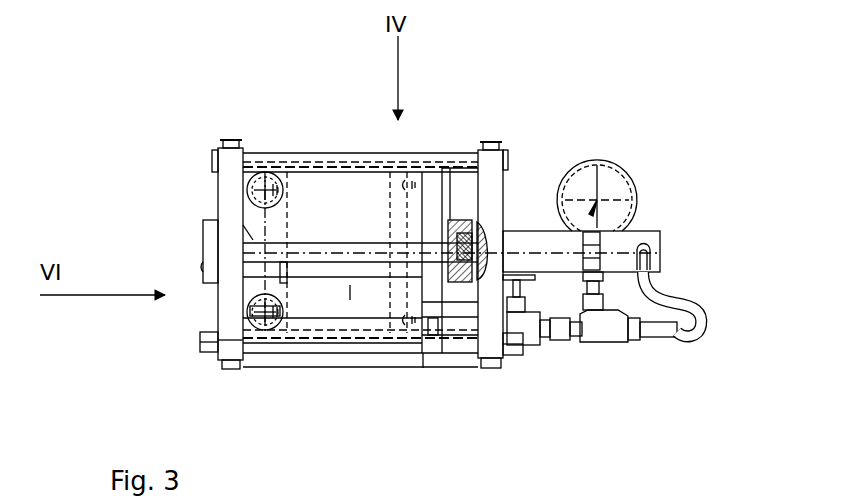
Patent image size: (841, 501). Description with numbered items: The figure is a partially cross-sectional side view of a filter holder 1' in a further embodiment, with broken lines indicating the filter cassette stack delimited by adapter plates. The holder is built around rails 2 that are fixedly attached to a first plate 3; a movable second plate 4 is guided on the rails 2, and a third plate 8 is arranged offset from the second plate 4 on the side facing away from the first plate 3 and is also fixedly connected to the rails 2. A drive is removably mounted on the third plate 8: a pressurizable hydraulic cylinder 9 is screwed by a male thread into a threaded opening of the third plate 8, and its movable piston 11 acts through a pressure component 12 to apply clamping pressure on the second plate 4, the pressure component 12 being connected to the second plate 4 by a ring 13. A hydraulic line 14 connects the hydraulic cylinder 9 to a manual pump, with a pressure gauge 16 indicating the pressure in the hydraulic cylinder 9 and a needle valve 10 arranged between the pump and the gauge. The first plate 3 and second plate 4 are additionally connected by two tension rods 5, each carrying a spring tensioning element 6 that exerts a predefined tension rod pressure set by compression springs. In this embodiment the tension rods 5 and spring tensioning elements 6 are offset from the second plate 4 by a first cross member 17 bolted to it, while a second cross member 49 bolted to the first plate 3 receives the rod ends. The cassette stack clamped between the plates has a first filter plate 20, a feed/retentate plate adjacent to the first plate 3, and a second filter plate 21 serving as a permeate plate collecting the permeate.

The filter holder 1' is at (747, 58).
The rails 2 is at (310, 157).
The first plate 3 is at (250, 230).
The second plate 4 is at (432, 307).
The tension rods 5 is at (328, 252).
The spring tensioning elements 6 is at (545, 260).
The third plate 8 is at (493, 203).
The hydraulic cylinder 9 is at (625, 242).
The needle valve 10 is at (532, 340).
The piston 11 is at (512, 290).
The pressure component 12 is at (489, 258).
The ring 13 is at (500, 150).
The hydraulic line 14 is at (700, 318).
The pressure gauge 16 is at (608, 185).
The first cross member 17 is at (450, 168).
The first filter plate 20 is at (253, 233).
The second filter plate 21 is at (400, 220).
The second cross member 49 is at (208, 255).